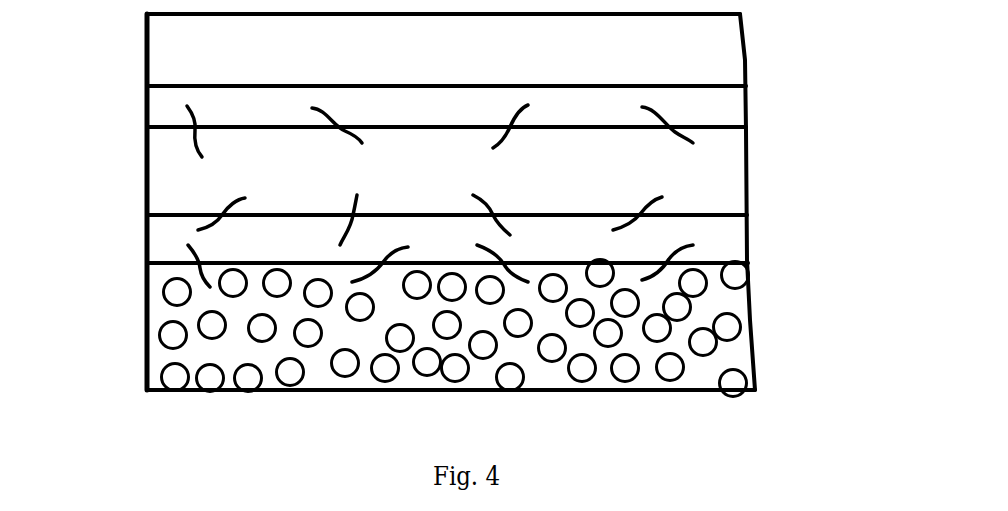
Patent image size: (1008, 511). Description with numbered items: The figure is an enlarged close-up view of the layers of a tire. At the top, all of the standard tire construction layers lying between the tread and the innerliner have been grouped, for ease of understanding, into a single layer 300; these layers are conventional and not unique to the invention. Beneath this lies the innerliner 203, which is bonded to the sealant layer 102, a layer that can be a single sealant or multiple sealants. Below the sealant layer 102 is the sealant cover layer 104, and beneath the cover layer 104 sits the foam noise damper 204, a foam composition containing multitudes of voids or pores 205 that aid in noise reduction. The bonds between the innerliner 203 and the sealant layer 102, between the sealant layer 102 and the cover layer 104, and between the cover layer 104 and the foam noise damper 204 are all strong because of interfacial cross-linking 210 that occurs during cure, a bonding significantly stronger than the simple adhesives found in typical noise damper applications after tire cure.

The single layer 300 is at (147, 43).
The innerliner 203 is at (748, 103).
The sealant layer 102 is at (147, 158).
The sealant cover layer 104 is at (147, 247).
The voids or pores 205 is at (148, 340).
The foam noise damper 204 is at (750, 308).
The interfacial cross-linking 210 is at (492, 199).